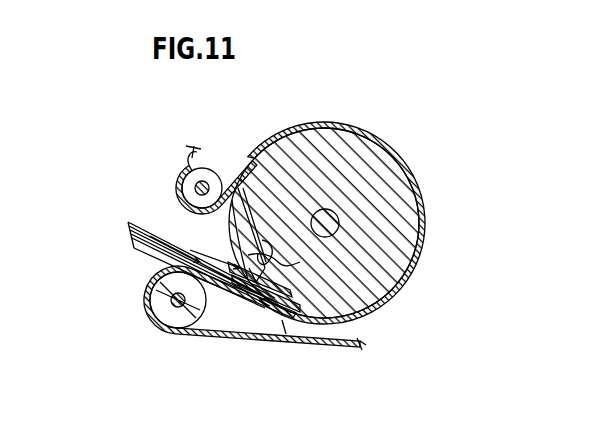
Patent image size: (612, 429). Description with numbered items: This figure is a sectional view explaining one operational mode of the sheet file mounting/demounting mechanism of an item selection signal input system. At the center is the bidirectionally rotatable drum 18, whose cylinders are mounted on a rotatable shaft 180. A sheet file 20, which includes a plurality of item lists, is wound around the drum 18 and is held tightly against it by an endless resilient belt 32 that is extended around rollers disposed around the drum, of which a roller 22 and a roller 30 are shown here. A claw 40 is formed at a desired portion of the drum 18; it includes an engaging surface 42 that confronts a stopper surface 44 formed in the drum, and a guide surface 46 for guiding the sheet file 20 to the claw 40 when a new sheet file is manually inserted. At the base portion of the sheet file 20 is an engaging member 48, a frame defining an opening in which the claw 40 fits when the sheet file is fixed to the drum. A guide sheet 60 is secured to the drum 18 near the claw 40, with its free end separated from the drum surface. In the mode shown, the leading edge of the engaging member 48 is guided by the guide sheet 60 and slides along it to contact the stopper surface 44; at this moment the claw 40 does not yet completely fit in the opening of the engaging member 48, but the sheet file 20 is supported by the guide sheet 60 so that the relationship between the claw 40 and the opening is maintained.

The bidirectionally rotatable drum 18 is at (378, 140).
The rotatable shaft 180 is at (339, 215).
The roller 22 is at (217, 165).
The sheet file 20 is at (132, 245).
The roller 30 is at (160, 306).
The endless resilient belt 32 is at (205, 340).
The guide surface 46 is at (258, 254).
The claw 40 is at (266, 256).
The engaging surface 42 is at (290, 264).
The stopper surface 44 is at (291, 282).
The engaging member 48 is at (296, 300).
The guide sheet 60 is at (284, 322).